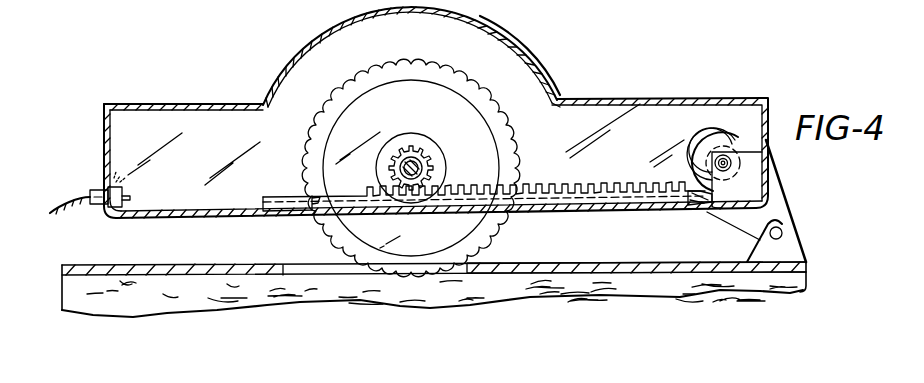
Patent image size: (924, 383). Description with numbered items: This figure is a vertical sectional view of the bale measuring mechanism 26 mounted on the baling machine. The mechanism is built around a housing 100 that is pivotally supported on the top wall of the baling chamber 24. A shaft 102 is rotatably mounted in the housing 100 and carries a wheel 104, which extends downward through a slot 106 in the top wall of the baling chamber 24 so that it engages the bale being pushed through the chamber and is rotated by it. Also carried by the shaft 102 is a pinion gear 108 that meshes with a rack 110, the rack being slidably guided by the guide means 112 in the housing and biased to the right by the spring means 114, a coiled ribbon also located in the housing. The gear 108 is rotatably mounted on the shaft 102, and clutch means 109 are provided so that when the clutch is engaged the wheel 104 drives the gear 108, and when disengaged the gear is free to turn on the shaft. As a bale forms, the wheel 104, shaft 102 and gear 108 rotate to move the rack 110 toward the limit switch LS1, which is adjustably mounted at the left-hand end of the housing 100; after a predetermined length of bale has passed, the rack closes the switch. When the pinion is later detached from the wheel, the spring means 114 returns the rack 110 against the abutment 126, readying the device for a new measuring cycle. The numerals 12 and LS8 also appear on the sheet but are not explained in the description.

The housing 100 is at (650, 100).
The bale measuring mechanism 26 is at (260, 83).
The wheel 104 is at (451, 78).
The shaft 102 is at (424, 160).
The pinion gear 108 is at (415, 156).
The clutch means 109 is at (447, 171).
The rack 110 is at (540, 186).
The guide means 112 is at (285, 206).
The abutment 126 is at (696, 208).
The spring means 114 is at (720, 130).
The slot 106 is at (508, 266).
The baling chamber 24 is at (813, 272).
The limit switch LS1 is at (108, 189).
The saw unit 12 is at (262, 0).
The limit switch LS8 is at (315, 6).